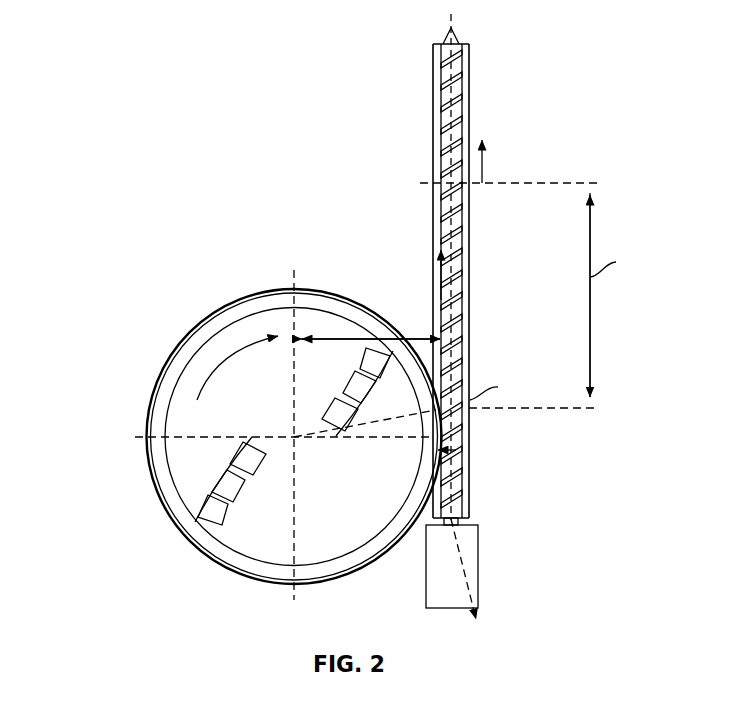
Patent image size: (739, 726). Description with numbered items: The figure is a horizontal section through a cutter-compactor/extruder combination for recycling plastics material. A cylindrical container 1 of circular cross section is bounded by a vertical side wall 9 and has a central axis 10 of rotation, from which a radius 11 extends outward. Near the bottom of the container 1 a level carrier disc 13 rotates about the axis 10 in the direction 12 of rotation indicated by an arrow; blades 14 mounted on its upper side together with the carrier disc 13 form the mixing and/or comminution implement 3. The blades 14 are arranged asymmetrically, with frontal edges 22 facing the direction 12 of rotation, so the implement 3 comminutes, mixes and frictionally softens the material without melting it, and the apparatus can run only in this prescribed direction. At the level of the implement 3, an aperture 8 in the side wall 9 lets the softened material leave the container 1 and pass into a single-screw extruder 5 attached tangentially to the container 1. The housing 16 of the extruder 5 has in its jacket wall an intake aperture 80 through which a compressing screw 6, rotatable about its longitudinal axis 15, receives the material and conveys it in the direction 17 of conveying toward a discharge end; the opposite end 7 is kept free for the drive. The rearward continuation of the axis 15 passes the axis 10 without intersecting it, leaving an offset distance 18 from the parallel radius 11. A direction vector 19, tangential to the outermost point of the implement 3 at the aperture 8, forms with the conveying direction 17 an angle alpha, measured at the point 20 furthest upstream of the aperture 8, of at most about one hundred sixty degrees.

The container 1 is at (110, 268).
The mixing and/or comminution implement 3 is at (188, 467).
The extruder 5 is at (418, 183).
The screw 6 is at (458, 120).
The end of the extruder 7 is at (458, 493).
The aperture 8 is at (428, 450).
The side wall 9 is at (150, 412).
The axis of rotation 10 is at (295, 438).
The radius 11 is at (292, 279).
The direction of rotation 12 is at (223, 360).
The carrier disc 13 is at (313, 313).
The blades 14 is at (226, 489).
The longitudinal axis 15 is at (440, 118).
The housing 16 is at (470, 253).
The direction of conveying 17 is at (484, 155).
The offset distance 18 is at (340, 342).
The direction vector 19 is at (478, 545).
The point 20 is at (433, 413).
The frontal edges 22 is at (253, 442).
The intake aperture 80 is at (470, 437).